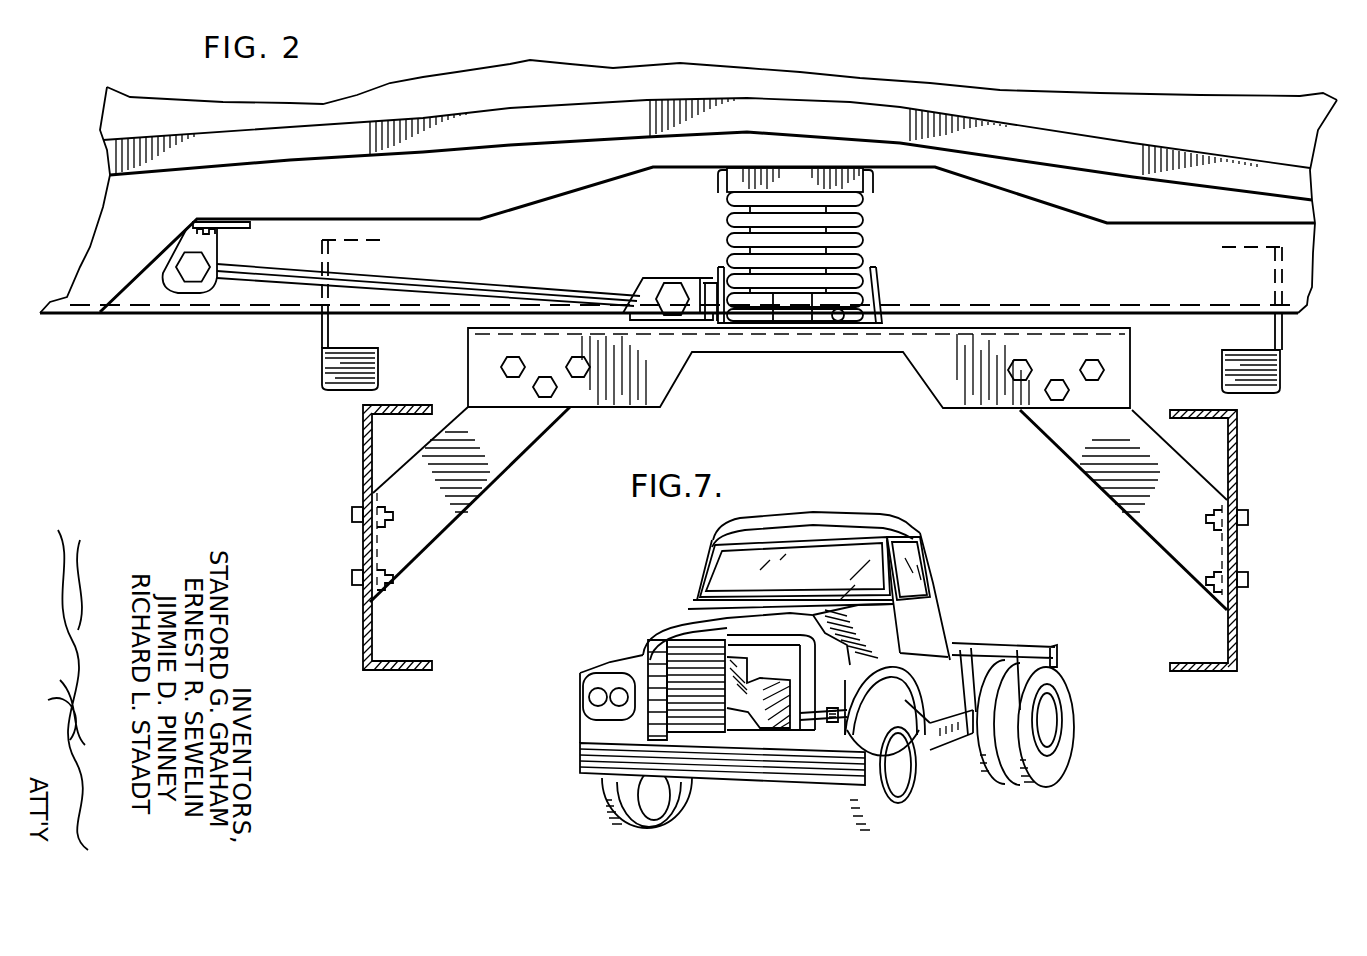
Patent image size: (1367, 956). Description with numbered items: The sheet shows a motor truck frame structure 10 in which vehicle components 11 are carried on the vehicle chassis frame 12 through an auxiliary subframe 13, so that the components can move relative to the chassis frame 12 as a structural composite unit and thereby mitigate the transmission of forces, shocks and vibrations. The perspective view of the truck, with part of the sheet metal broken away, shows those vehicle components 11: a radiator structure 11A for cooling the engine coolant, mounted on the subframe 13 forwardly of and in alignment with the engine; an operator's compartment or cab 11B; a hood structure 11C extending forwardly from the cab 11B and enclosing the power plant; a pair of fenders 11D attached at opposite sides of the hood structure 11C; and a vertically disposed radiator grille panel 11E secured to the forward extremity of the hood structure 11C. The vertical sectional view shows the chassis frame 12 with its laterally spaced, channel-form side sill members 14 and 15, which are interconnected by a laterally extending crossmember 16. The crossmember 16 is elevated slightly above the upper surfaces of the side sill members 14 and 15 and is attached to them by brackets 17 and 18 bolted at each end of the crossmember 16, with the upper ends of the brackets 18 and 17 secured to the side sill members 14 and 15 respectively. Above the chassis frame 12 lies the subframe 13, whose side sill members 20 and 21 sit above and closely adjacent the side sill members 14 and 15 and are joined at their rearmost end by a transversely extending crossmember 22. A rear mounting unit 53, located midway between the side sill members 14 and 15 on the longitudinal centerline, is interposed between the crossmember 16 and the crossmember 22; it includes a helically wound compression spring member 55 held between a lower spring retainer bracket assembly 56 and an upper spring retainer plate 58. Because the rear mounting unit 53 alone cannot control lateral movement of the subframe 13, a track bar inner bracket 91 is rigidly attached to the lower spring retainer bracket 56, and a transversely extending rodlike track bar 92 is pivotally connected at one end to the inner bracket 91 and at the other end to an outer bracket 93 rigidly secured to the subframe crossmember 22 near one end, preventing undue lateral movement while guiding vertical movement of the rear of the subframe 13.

In FIG. 7, the motor truck frame structure 10 is at (1013, 650).
In FIG. 2, the vehicle components 11 is at (1167, 114).
In FIG. 7, the vehicle components 11 is at (949, 765).
In FIG. 7, the radiator structure 11A is at (787, 723).
In FIG. 7, the operator's compartment or cab 11B is at (912, 521).
In FIG. 7, the hood structure 11C is at (697, 605).
In FIG. 7, the fenders 11D is at (593, 729).
In FIG. 7, the radiator grille panel 11E is at (703, 727).
In FIG. 7, the chassis frame 12 is at (995, 635).
In FIG. 7, the subframe 13 is at (828, 740).
In FIG. 2, the side sill member 14 is at (1237, 633).
In FIG. 2, the side sill member 15 is at (363, 633).
In FIG. 7, the side sill member 15 is at (963, 660).
In FIG. 2, the crossmember 16 is at (972, 388).
In FIG. 2, the bracket 17 is at (512, 443).
In FIG. 2, the bracket 18 is at (1132, 495).
In FIG. 2, the side sill member 20 is at (1287, 330).
In FIG. 2, the side sill member 21 is at (322, 340).
In FIG. 2, the crossmember 22 is at (997, 120).
In FIG. 2, the rear mounting unit 53 is at (880, 228).
In FIG. 2, the compression spring member 55 is at (860, 217).
In FIG. 2, the lower spring retainer bracket assembly 56 is at (838, 325).
In FIG. 2, the upper spring retainer plate 58 is at (737, 181).
In FIG. 2, the track bar inner bracket 91 is at (643, 290).
In FIG. 2, the track bar 92 is at (487, 290).
In FIG. 2, the outer bracket 93 is at (163, 313).